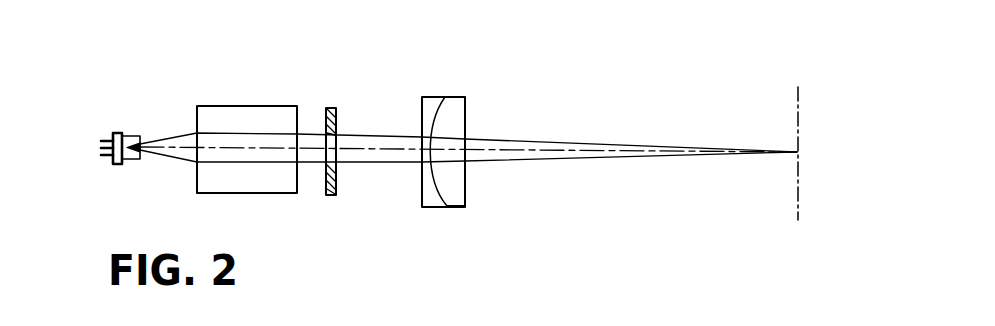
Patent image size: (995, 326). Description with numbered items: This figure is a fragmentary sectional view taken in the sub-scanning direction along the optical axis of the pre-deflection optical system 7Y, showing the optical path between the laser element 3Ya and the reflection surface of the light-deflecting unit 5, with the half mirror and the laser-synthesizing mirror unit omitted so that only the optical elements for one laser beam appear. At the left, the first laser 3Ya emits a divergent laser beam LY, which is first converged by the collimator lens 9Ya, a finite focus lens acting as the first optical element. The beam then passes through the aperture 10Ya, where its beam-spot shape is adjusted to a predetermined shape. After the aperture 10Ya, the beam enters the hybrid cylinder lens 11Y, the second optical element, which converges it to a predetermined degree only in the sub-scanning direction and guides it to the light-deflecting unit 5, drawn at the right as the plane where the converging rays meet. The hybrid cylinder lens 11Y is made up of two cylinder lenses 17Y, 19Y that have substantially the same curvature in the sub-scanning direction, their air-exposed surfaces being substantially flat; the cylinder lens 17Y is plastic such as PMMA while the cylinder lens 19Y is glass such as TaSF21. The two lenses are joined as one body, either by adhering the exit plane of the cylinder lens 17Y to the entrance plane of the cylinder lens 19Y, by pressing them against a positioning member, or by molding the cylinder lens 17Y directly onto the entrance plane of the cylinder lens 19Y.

The first laser 3Ya is at (118, 132).
The collimator lens 9Ya is at (230, 115).
The aperture 10Ya is at (332, 107).
The pre-deflection optical system 7Y is at (375, 180).
The hybrid cylinder lens 11Y is at (456, 103).
The cylinder lens 17Y is at (435, 100).
The cylinder lens 19Y is at (458, 100).
The laser beam LY is at (683, 148).
The light-deflecting unit 5 is at (797, 172).